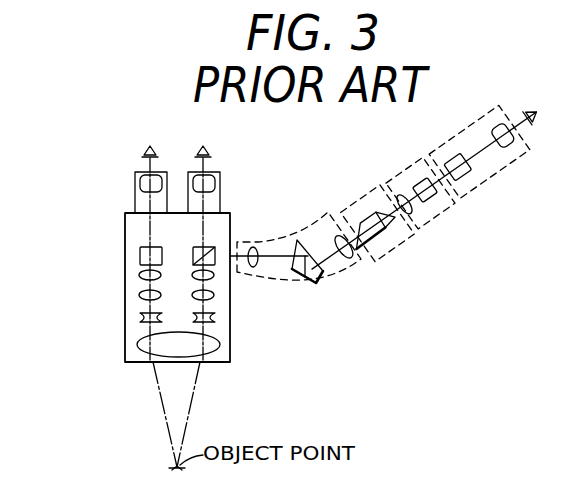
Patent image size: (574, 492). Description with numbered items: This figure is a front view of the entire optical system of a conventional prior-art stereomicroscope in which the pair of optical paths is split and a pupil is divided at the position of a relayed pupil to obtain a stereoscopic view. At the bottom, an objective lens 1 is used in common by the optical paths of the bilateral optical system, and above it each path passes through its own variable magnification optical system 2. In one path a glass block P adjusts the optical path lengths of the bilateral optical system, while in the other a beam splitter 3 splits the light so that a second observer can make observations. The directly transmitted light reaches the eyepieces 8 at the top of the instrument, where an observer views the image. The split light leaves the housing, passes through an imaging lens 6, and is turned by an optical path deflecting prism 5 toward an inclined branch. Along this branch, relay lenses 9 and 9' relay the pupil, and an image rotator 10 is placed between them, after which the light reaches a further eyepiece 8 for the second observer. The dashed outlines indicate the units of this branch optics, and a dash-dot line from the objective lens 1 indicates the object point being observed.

The objective lens 1 is at (160, 340).
The variable magnification optical system 2 is at (119, 265).
The beam splitter 3 is at (207, 255).
The optical path deflecting prism 5 is at (294, 282).
The imaging lens 6 is at (255, 246).
The eyepiece 8 is at (142, 173).
The relay lens 9 is at (349, 277).
The relay lens 9' is at (433, 216).
The image rotator 10 is at (363, 222).
The glass block P is at (140, 257).